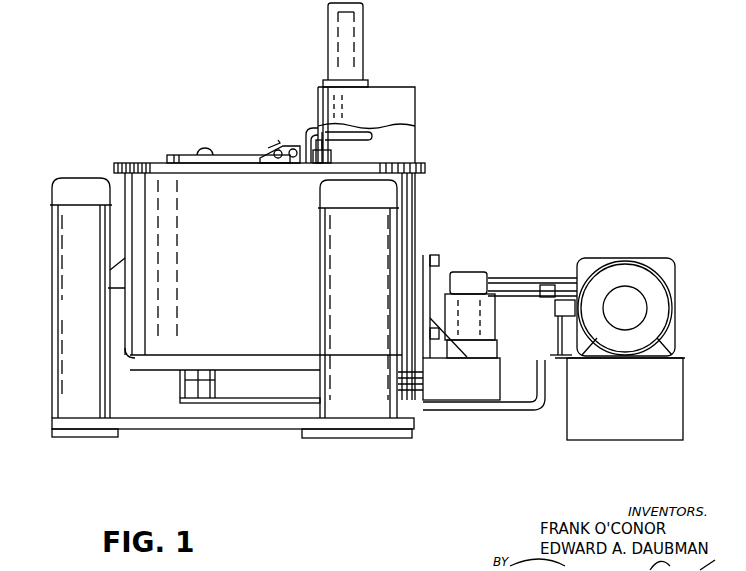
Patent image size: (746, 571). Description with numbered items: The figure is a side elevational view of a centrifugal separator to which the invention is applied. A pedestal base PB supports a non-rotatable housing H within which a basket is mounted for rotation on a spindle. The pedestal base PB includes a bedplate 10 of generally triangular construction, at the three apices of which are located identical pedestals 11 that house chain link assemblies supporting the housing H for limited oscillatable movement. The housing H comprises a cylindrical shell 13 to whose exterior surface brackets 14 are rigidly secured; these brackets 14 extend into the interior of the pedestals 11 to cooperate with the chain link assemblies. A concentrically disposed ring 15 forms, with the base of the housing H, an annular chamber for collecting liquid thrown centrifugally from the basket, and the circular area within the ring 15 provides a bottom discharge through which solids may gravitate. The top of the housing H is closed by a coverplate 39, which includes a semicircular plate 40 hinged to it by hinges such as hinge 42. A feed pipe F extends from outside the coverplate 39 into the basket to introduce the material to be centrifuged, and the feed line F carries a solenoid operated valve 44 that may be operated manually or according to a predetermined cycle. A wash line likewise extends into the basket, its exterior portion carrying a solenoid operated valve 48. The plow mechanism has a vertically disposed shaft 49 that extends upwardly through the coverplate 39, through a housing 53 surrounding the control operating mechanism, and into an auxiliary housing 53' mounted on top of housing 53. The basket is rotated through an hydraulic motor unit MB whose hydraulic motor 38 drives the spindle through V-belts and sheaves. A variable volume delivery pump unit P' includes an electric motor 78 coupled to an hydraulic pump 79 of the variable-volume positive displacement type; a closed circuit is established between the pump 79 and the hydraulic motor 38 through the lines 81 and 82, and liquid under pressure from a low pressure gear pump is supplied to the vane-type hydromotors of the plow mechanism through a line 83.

The bedplate 10 is at (113, 431).
The pedestals 11 is at (60, 333).
The cylindrical shell 13 is at (128, 355).
The brackets 14 is at (110, 268).
The ring 15 is at (188, 372).
The hydraulic motor 38 is at (493, 312).
The coverplate 39 is at (125, 163).
The semicircular plate 40 is at (170, 156).
The hinge 42 is at (295, 150).
The solenoid operated valve 44 is at (312, 128).
The solenoid operated valve 48 is at (332, 160).
The shaft 49 is at (352, 78).
The housing 53 is at (385, 125).
The auxiliary housing 53' is at (365, 41).
The electric motor 78 is at (665, 303).
The hydraulic pump 79 is at (588, 258).
The line 81 is at (563, 280).
The line 82 is at (520, 280).
The line 83 is at (500, 410).
The feed pipe F is at (316, 112).
The housing H is at (258, 282).
The hydraulic motor unit MB is at (477, 270).
The variable volume delivery pump unit P' is at (632, 321).
The pedestal base PB is at (207, 450).